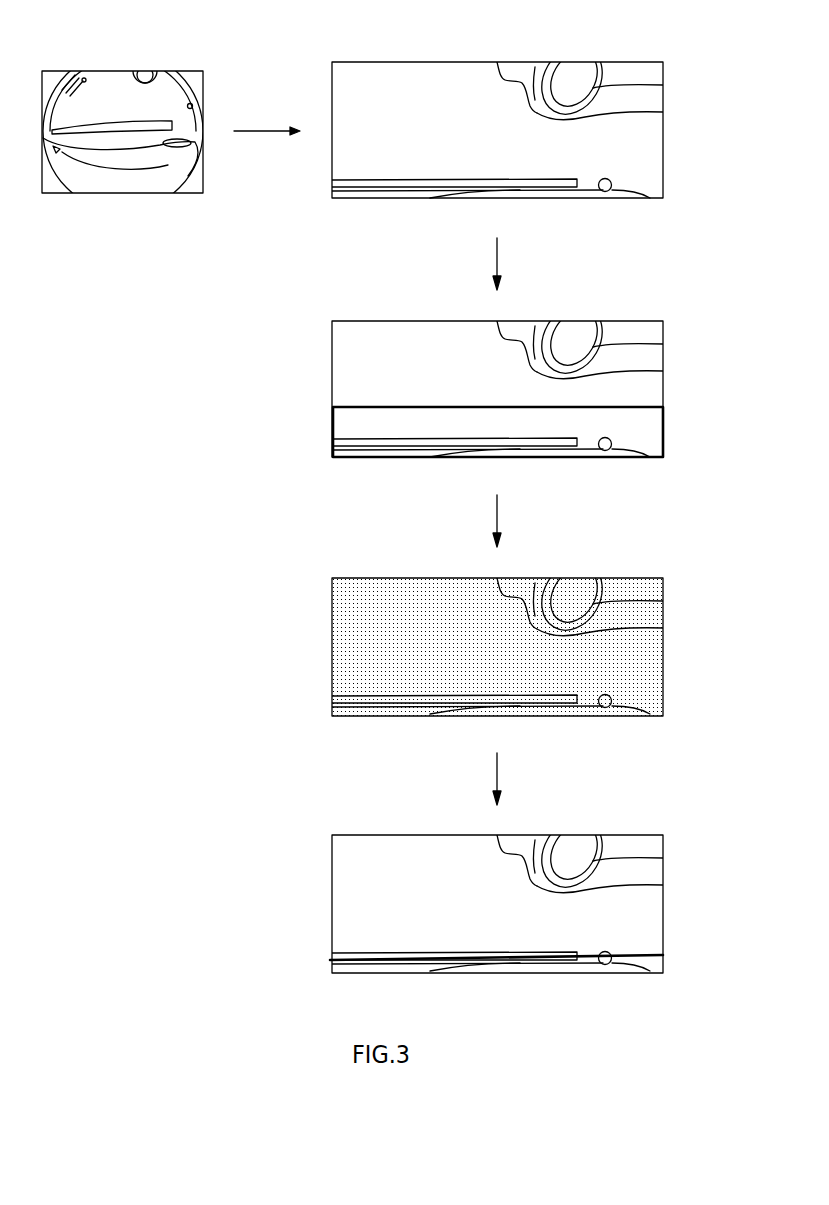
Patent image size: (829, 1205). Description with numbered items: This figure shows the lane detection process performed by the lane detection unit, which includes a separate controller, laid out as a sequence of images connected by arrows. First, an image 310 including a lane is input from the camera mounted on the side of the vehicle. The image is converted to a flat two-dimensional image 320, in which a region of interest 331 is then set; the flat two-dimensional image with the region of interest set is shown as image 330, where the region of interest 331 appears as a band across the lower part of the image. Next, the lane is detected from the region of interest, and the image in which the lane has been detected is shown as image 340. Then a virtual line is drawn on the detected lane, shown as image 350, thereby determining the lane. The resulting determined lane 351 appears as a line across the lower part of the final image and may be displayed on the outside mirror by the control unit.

The image 310 is at (118, 70).
The flat 2D image 320 is at (663, 127).
The flat 2D image with ROI set 330 is at (663, 386).
The region of interest 331 is at (340, 427).
The image with detected lane 340 is at (663, 645).
The image with virtual line 350 is at (663, 900).
The determined lane 351 is at (346, 960).